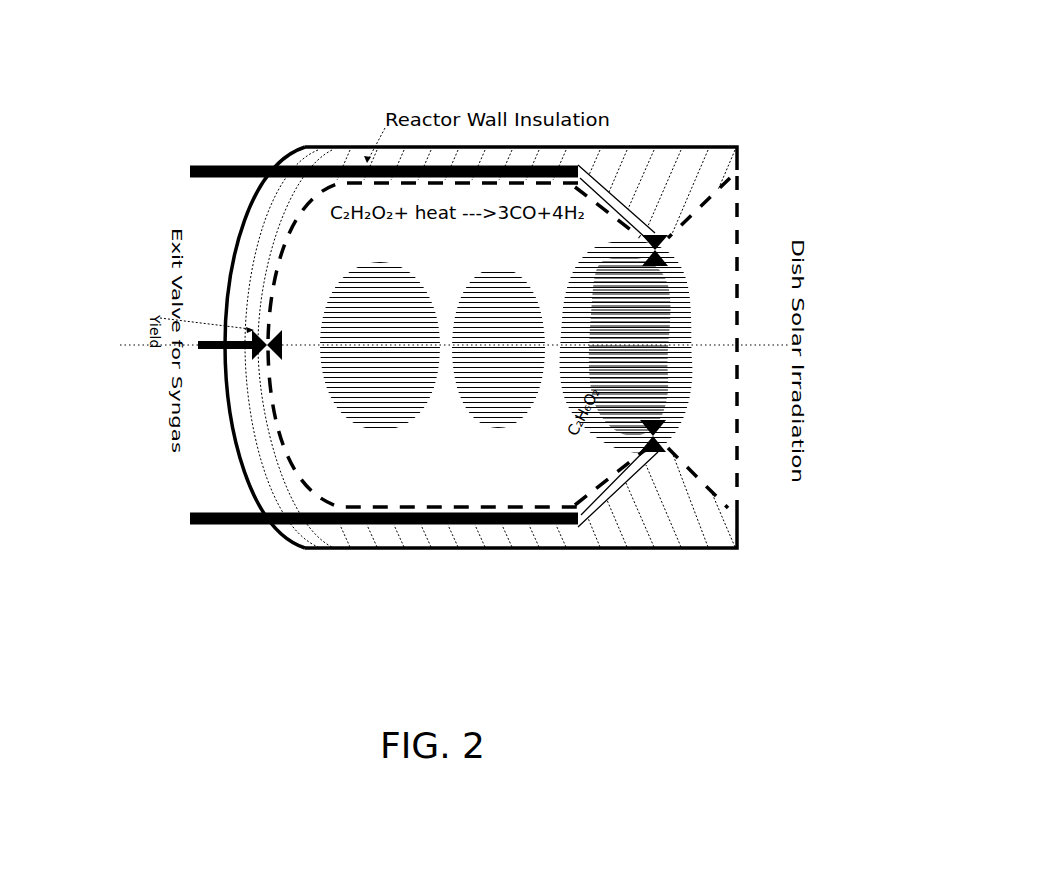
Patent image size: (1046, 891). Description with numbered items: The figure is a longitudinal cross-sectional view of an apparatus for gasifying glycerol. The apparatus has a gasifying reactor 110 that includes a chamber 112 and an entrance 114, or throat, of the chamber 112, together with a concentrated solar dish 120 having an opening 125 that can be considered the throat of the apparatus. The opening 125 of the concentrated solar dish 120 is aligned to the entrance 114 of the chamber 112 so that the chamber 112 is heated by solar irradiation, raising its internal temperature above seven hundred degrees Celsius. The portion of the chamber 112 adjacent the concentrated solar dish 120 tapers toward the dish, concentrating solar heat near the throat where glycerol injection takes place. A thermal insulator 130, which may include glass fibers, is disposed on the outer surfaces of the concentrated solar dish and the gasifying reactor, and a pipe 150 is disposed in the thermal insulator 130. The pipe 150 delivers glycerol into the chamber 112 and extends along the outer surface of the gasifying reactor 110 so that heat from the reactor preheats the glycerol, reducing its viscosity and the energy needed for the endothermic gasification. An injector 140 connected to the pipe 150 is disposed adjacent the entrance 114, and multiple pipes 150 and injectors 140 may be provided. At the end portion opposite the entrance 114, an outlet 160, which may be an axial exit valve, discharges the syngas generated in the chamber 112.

The gasifying reactor 110 is at (294, 221).
The chamber 112 is at (335, 481).
The entrance 114 is at (647, 350).
The concentrated solar dish 120 is at (738, 495).
The opening 125 is at (664, 295).
The thermal insulator 130 is at (630, 143).
The injector 140 is at (661, 219).
The pipe 150 is at (247, 162).
The outlet 160 is at (251, 367).